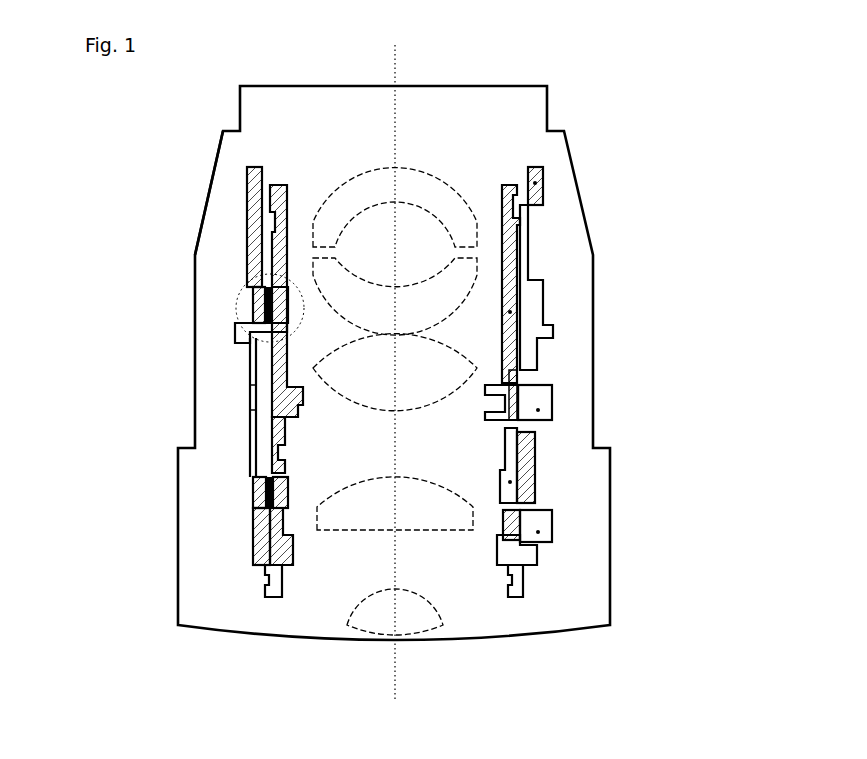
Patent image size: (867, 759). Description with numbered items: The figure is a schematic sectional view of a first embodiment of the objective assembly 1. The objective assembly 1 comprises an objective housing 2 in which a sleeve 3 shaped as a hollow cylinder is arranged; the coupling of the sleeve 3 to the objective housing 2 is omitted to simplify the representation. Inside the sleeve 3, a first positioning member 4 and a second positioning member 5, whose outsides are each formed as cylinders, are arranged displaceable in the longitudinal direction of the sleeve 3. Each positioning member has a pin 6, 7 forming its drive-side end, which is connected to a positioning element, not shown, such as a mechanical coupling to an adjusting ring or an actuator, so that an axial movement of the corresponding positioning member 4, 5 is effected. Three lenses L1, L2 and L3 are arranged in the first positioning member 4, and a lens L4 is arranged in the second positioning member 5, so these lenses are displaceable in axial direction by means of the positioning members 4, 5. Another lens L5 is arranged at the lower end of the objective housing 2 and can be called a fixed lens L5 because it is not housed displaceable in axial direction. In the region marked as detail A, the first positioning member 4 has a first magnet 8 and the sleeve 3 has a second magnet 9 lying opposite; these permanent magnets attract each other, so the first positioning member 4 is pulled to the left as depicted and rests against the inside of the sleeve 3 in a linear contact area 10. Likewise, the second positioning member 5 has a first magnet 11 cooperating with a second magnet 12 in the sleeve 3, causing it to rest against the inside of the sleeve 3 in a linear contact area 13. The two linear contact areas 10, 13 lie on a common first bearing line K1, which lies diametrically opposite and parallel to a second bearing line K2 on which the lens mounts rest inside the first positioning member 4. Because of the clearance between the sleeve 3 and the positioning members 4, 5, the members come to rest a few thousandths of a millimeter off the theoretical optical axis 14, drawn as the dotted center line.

The objective assembly 1 is at (213, 168).
The objective housing 2 is at (550, 97).
The sleeve 3 is at (537, 183).
The first positioning member 4 is at (512, 312).
The second positioning member 5 is at (512, 482).
The pin 6 is at (540, 410).
The pin 7 is at (540, 534).
The first magnet 8 is at (252, 345).
The second magnet 9 is at (258, 311).
The linear contact area 10 is at (270, 370).
The first magnet 11 is at (256, 505).
The second magnet 12 is at (253, 482).
The linear contact area 13 is at (272, 537).
The optical axis 14 is at (390, 690).
The detail A is at (226, 292).
The first bearing line K1 is at (258, 397).
The second bearing line K2 is at (545, 292).
The lens L1 is at (477, 232).
The lens L2 is at (480, 265).
The lens L3 is at (478, 368).
The lens L4 is at (473, 515).
The fixed lens L5 is at (435, 628).